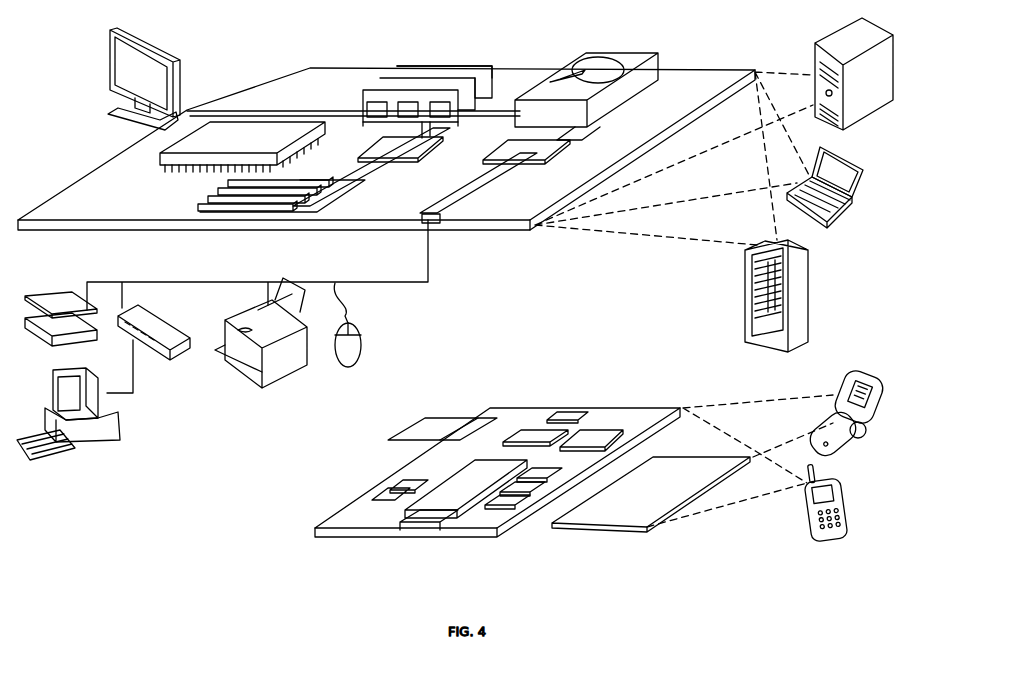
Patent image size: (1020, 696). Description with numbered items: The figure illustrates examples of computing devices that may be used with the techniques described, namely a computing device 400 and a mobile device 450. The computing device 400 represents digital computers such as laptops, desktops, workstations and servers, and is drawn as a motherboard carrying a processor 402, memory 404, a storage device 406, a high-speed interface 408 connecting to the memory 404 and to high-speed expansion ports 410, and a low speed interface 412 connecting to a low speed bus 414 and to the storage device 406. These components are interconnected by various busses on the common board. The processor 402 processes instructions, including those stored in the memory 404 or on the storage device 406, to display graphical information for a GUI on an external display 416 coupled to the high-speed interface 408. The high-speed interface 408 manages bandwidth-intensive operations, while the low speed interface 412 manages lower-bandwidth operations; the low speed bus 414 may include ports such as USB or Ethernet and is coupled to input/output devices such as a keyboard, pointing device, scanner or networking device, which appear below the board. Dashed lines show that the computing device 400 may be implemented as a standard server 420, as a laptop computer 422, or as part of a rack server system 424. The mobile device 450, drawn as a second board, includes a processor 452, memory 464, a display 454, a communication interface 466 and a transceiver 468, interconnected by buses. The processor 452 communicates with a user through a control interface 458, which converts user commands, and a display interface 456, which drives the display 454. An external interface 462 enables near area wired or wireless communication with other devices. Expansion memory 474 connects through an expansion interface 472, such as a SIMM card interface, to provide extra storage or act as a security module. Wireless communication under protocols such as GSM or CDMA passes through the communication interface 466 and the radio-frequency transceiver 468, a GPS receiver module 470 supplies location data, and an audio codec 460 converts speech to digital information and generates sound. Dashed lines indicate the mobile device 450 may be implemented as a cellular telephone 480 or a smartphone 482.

The computing device 400 is at (260, 42).
The processor 402 is at (140, 158).
The memory 404 is at (418, 68).
The storage device 406 is at (583, 62).
The high-speed interface 408 is at (350, 92).
The high-speed expansion ports 410 is at (195, 198).
The low speed interface 412 is at (512, 138).
The low speed bus 414 is at (450, 224).
The display 416 is at (110, 31).
The standard server 420 is at (818, 60).
The laptop computer 422 is at (862, 170).
The rack server system 424 is at (747, 312).
The mobile device 450 is at (303, 549).
The processor 452 is at (445, 512).
The display 454 is at (633, 522).
The display interface 456 is at (508, 512).
The control interface 458 is at (525, 498).
The audio codec 460 is at (548, 482).
The external interface 462 is at (416, 528).
The memory 464 is at (380, 497).
The communication interface 466 is at (535, 432).
The transceiver 468 is at (588, 430).
The GPS receiver module 470 is at (573, 412).
The expansion interface 472 is at (484, 418).
The expansion memory 474 is at (432, 418).
The cellular telephone 480 is at (842, 380).
The smartphone 482 is at (805, 510).